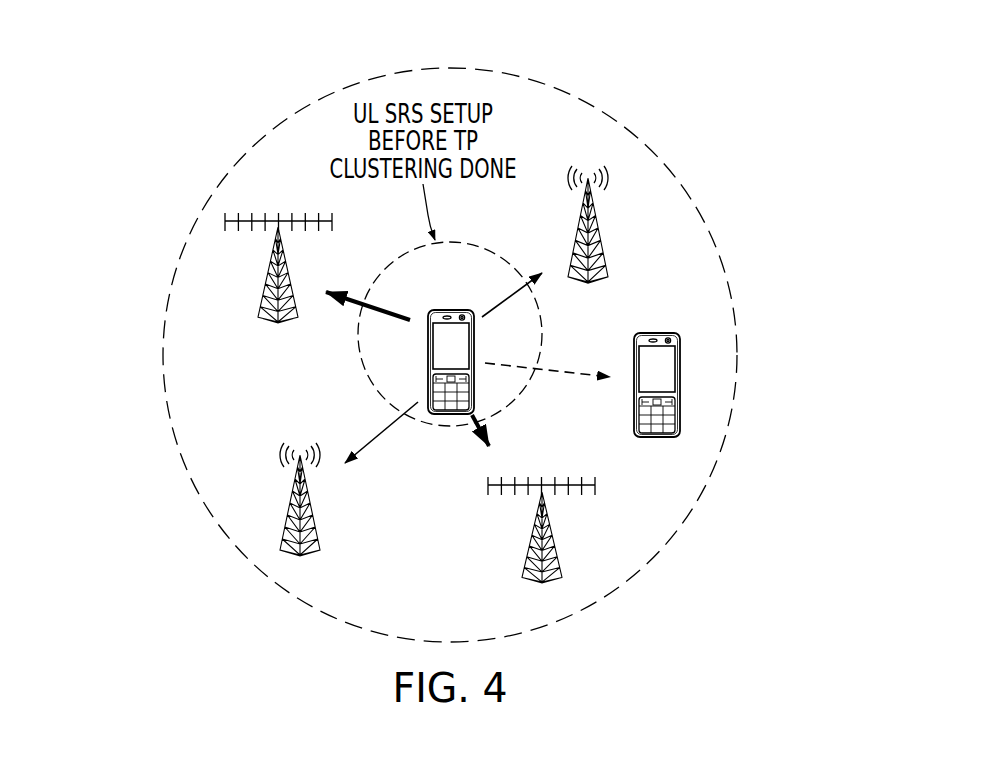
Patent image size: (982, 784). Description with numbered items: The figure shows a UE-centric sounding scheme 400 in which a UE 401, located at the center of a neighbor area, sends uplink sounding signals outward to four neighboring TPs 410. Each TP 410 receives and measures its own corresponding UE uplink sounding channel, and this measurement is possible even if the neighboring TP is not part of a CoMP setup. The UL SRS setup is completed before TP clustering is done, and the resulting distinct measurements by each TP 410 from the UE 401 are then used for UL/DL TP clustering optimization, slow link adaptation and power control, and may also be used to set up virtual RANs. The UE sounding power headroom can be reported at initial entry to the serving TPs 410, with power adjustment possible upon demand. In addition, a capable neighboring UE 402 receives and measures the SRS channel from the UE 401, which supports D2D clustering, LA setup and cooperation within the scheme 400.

The UE-centric sounding scheme 400 is at (618, 66).
The UE 401 is at (453, 309).
The capable neighboring UE 402 is at (657, 332).
The TPs 410 is at (265, 272).